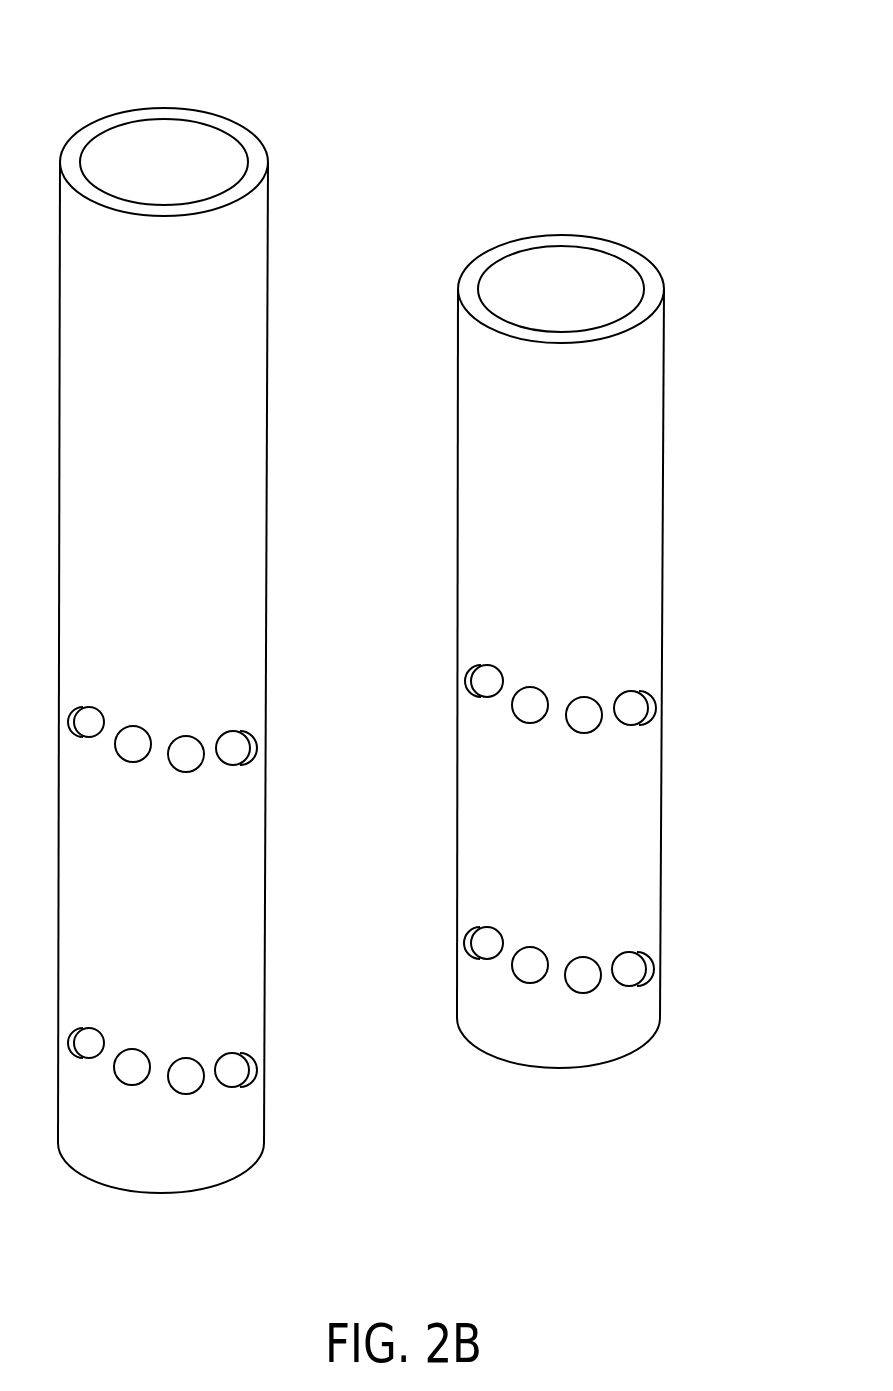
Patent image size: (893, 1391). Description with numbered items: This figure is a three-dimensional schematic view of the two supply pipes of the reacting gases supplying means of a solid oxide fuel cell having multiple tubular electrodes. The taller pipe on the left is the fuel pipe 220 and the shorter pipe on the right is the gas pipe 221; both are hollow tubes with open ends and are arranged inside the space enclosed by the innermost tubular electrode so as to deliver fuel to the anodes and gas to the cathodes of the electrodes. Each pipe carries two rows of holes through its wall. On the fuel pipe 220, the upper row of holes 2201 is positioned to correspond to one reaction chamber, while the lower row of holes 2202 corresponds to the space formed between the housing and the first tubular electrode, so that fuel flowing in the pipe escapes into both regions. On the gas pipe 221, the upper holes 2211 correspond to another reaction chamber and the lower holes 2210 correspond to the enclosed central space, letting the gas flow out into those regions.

The fuel pipe 220 is at (157, 95).
The gas pipe 221 is at (551, 222).
The holes 2201 is at (235, 752).
The holes 2202 is at (233, 1072).
The holes 2211 is at (623, 700).
The holes 2210 is at (623, 972).